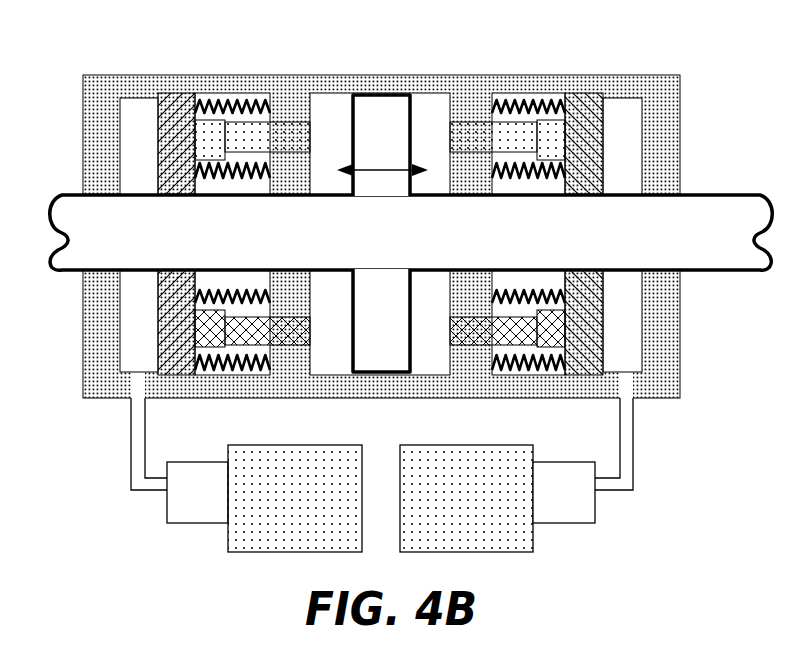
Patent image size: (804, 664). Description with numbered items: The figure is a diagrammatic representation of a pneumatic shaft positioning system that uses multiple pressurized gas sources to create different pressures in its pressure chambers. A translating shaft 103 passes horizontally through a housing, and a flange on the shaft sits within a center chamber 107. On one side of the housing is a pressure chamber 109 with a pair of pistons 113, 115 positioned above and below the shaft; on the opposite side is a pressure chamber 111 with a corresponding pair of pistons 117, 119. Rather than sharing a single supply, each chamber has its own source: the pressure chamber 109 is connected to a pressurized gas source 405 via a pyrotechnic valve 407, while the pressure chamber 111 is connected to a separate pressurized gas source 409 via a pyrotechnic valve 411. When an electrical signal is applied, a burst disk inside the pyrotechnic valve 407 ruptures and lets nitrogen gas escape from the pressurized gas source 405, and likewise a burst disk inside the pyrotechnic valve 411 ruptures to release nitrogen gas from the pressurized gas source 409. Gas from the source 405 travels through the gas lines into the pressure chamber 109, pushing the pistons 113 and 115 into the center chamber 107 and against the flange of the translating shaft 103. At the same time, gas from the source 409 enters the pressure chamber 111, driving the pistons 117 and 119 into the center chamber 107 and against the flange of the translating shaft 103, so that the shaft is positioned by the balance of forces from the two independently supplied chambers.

The translating shaft 103 is at (527, 246).
The center chamber 107 is at (437, 110).
The pressure chamber 109 is at (128, 157).
The pressure chamber 111 is at (627, 115).
The piston 113 is at (157, 110).
The piston 115 is at (160, 333).
The piston 117 is at (607, 175).
The piston 119 is at (605, 350).
The pressurized gas source 405 is at (316, 504).
The pyrotechnic valve 407 is at (218, 504).
The pressurized gas source 409 is at (488, 504).
The pyrotechnic valve 411 is at (585, 504).